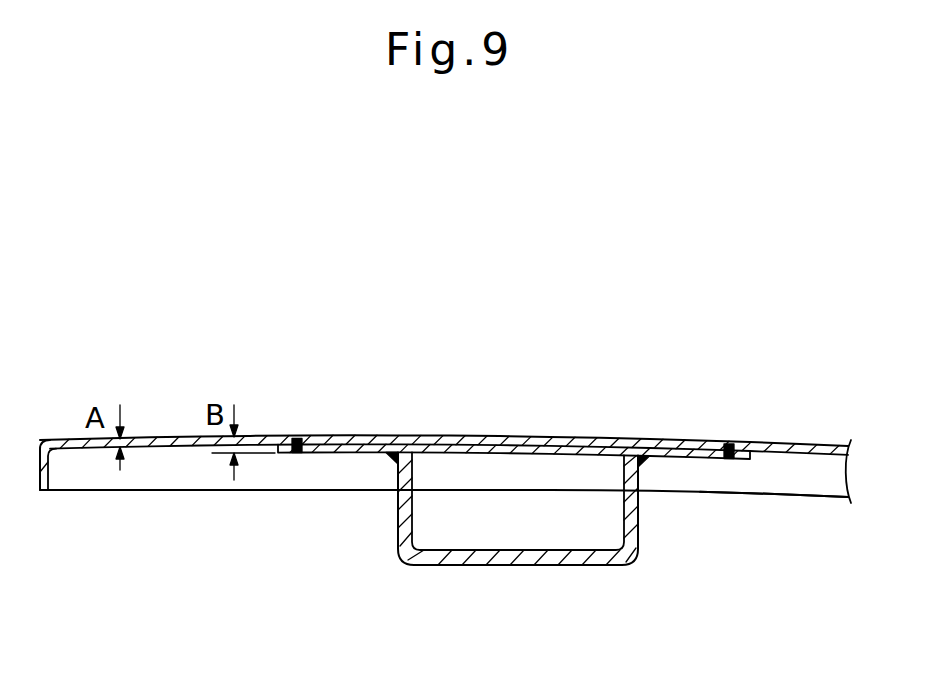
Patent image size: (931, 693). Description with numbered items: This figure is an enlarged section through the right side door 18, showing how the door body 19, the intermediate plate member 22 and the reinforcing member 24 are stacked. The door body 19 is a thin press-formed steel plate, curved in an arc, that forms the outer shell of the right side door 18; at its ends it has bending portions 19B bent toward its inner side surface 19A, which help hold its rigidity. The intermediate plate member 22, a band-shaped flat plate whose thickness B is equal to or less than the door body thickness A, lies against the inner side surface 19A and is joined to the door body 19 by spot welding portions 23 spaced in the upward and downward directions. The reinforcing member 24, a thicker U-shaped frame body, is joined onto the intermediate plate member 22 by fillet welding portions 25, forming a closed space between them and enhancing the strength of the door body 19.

The right side door 18 is at (463, 437).
The door body 19 is at (157, 439).
The inner side surface 19A is at (783, 456).
The bending portion 19B is at (49, 482).
The intermediate plate member 22 is at (285, 458).
The spot welding portion 23 is at (301, 438).
The reinforcing member 24 is at (525, 560).
The fillet welding portion 25 is at (392, 458).